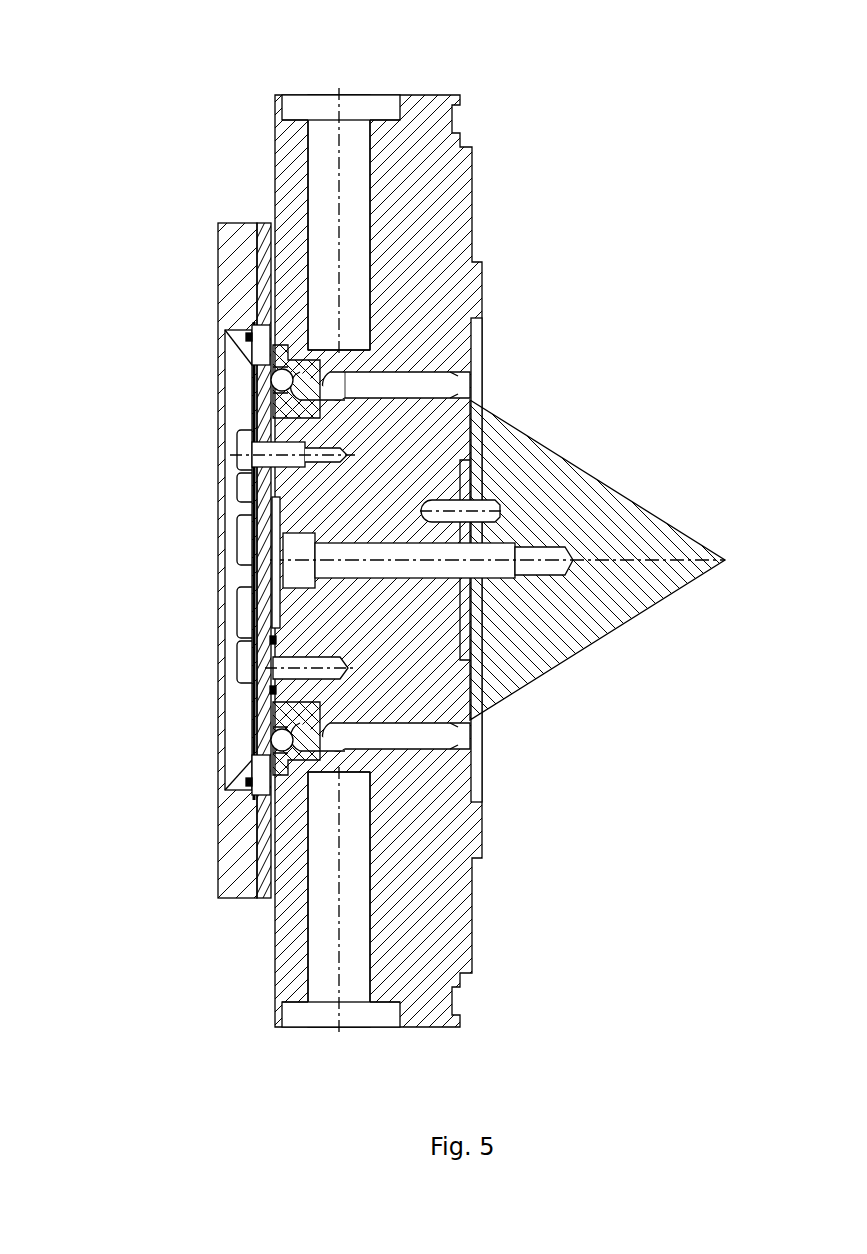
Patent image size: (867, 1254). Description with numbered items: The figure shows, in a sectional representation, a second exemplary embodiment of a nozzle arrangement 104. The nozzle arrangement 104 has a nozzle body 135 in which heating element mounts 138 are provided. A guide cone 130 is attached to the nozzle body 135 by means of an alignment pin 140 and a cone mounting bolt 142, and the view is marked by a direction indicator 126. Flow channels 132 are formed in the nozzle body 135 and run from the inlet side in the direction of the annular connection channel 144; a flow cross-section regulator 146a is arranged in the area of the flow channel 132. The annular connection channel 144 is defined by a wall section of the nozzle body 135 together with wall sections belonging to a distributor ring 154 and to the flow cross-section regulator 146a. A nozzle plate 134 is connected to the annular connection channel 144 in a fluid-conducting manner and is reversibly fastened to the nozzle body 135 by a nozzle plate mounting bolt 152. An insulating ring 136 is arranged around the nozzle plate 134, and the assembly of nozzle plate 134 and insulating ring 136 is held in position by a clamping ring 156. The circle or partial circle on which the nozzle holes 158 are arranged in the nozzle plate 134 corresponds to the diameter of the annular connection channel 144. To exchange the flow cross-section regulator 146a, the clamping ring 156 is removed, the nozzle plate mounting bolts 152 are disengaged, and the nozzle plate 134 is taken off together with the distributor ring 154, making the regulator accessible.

The nozzle arrangement 104 is at (170, 75).
The viewing direction 126 is at (655, 372).
The guide cone 130 is at (675, 545).
The flow channel 132 is at (455, 378).
The nozzle plate 134 is at (268, 425).
The nozzle body 135 is at (432, 197).
The insulating ring 136 is at (262, 240).
The heating element mount 138 is at (355, 150).
The alignment pin 140 is at (473, 505).
The cone mounting bolt 142 is at (545, 555).
The annular connection channel 144 is at (286, 380).
The flow cross-section regulator 146a is at (268, 690).
The nozzle plate mounting bolt 152 is at (250, 468).
The distributor ring 154 is at (278, 760).
The clamping ring 156 is at (243, 843).
The nozzle hole 158 is at (244, 362).